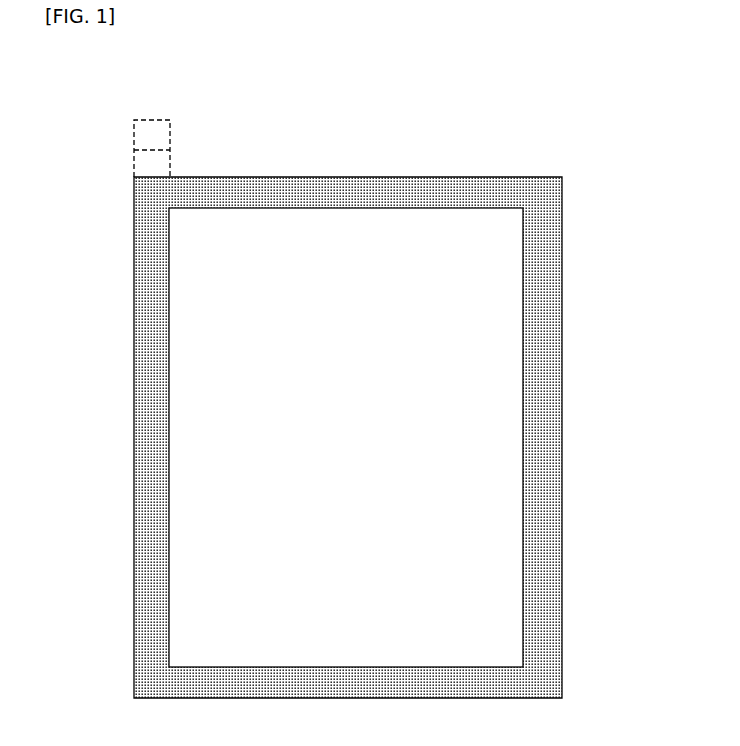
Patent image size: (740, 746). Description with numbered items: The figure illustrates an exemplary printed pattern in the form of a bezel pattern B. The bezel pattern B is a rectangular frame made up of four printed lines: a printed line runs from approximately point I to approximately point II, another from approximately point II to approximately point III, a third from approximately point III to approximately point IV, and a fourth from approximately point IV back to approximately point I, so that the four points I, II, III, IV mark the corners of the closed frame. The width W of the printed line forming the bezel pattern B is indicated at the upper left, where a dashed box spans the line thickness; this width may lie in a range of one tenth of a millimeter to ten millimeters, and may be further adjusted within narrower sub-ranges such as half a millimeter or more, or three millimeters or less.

The bezel pattern B is at (346, 191).
The width W is at (150, 138).
The point I is at (546, 190).
The point II is at (152, 197).
The point III is at (152, 680).
The point IV is at (541, 681).